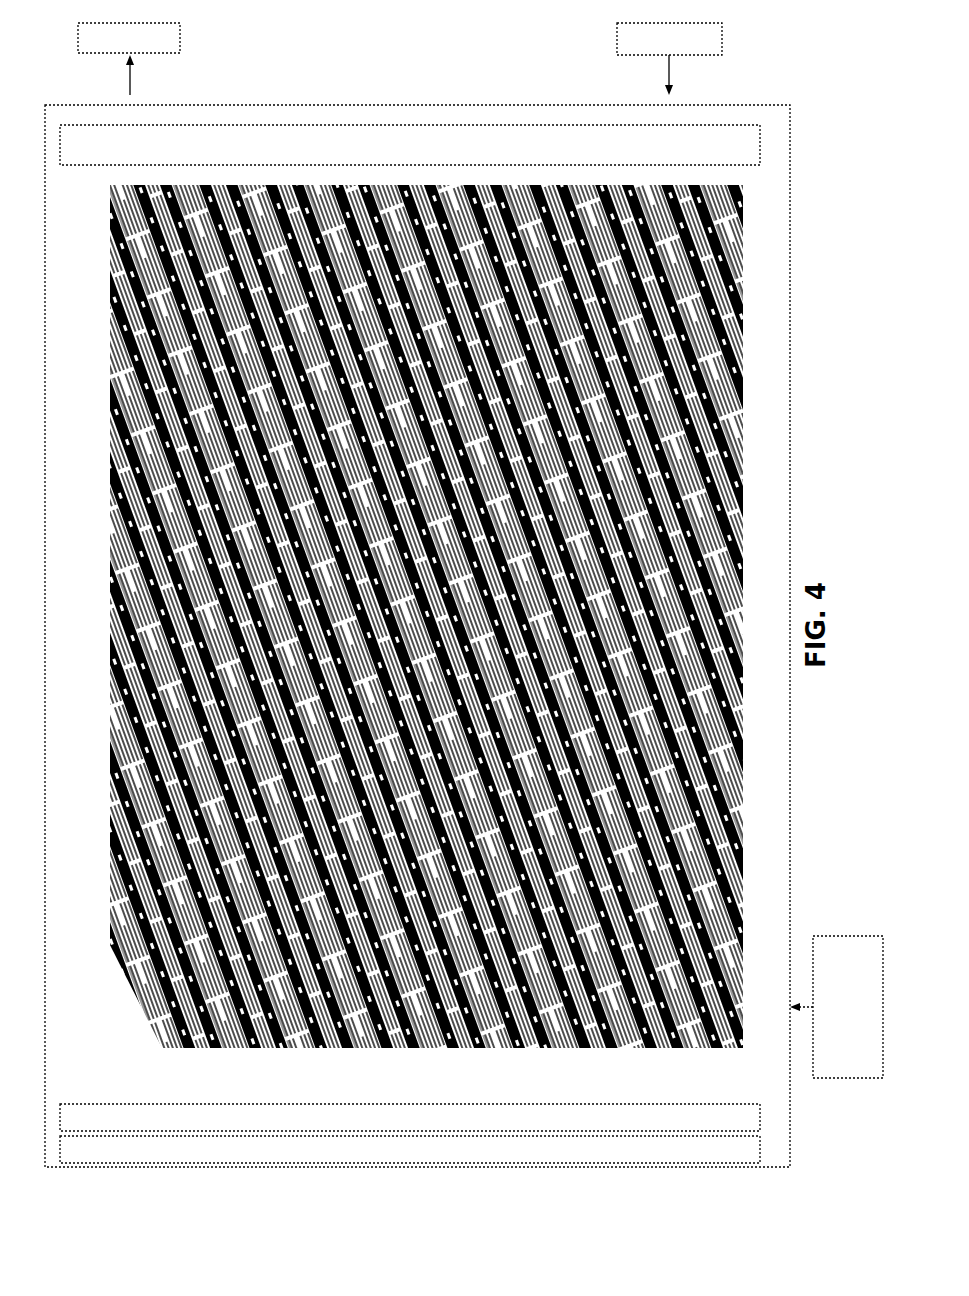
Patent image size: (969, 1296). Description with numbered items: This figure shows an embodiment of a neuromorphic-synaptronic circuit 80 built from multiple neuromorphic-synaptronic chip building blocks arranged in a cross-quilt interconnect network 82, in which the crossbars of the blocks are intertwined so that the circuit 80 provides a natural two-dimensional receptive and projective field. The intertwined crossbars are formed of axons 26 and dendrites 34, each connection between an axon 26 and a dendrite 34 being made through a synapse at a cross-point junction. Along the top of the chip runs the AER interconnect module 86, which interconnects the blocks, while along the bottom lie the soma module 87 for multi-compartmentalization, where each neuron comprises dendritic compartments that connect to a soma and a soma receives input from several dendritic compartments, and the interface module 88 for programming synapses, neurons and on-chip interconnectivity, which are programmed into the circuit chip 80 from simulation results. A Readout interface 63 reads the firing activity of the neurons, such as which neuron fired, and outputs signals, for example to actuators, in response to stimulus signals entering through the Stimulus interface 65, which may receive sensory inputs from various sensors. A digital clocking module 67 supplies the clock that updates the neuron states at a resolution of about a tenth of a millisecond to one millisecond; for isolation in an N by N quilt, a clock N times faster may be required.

The neuromorphic-synaptronic circuit 80 is at (50, 43).
The Readout interface 63 is at (180, 43).
The Stimulus interface 65 is at (722, 38).
The AER interconnect module 86 is at (725, 125).
The cross-quilt interconnect network 82 is at (742, 817).
The axon 26 is at (725, 818).
The dendrite 34 is at (733, 907).
The digital clocking module 67 is at (843, 936).
The soma module 87 is at (730, 1104).
The interface module 88 is at (688, 1134).